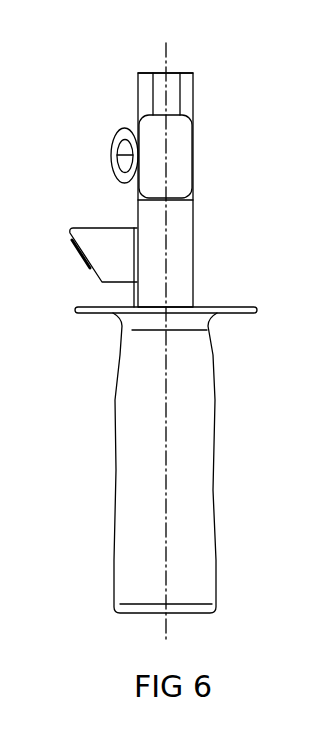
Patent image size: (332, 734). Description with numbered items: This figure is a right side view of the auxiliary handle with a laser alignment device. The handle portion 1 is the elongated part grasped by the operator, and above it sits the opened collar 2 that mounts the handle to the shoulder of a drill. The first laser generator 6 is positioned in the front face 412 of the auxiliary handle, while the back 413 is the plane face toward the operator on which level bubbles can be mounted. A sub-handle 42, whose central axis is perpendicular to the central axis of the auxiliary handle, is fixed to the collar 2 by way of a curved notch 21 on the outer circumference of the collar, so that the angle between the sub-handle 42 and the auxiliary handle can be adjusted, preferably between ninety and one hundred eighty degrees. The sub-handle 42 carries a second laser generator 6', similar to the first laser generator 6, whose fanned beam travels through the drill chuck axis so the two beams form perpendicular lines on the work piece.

The handle portion 1 is at (183, 460).
The opened collar 2 is at (205, 70).
The curved notch 21 is at (106, 70).
The sub-handle 42 is at (205, 133).
The front face 412 is at (92, 225).
The back 413 is at (208, 190).
The first laser generator 6 is at (91, 257).
The second laser generator 6' is at (96, 128).